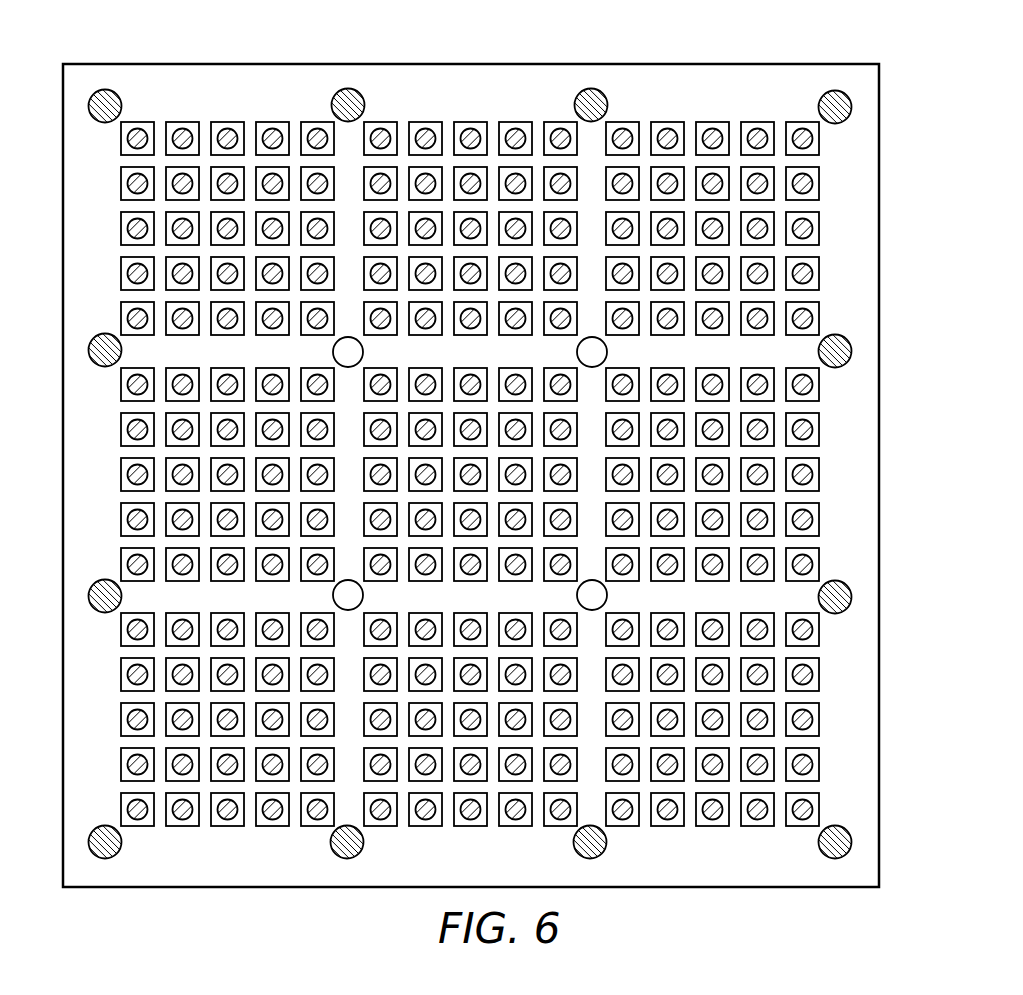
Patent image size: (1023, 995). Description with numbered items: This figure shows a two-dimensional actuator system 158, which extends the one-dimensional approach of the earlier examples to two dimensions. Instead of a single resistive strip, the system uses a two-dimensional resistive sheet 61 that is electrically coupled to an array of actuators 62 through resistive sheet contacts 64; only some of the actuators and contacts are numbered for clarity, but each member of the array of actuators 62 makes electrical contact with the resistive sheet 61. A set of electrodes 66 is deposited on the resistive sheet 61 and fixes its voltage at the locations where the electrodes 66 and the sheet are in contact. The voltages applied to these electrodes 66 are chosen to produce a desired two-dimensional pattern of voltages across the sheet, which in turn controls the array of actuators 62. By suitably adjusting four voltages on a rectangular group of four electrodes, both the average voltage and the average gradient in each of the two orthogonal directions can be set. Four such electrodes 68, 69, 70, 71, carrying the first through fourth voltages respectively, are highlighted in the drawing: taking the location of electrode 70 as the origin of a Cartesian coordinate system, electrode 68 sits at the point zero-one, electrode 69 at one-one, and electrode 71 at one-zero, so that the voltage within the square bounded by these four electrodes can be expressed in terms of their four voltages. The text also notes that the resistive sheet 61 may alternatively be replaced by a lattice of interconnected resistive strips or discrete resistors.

The LED array assembly 158 is at (524, 475).
The resistive sheet 61 is at (869, 304).
The array of actuators 62 is at (819, 548).
The resistive sheet contacts 64 is at (809, 563).
The electrodes 66 is at (92, 109).
The electrode 68 is at (363, 348).
The electrode 69 is at (607, 348).
The electrode 70 is at (363, 591).
The electrode 71 is at (607, 591).